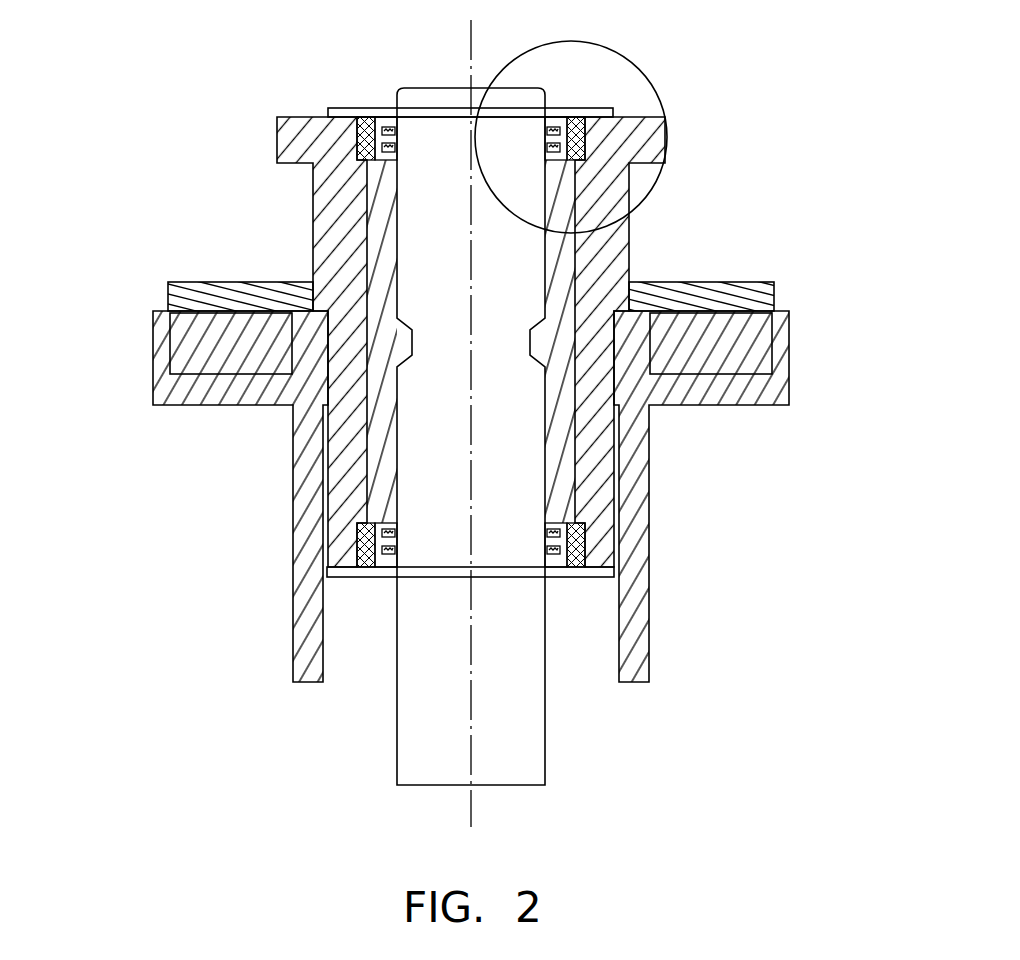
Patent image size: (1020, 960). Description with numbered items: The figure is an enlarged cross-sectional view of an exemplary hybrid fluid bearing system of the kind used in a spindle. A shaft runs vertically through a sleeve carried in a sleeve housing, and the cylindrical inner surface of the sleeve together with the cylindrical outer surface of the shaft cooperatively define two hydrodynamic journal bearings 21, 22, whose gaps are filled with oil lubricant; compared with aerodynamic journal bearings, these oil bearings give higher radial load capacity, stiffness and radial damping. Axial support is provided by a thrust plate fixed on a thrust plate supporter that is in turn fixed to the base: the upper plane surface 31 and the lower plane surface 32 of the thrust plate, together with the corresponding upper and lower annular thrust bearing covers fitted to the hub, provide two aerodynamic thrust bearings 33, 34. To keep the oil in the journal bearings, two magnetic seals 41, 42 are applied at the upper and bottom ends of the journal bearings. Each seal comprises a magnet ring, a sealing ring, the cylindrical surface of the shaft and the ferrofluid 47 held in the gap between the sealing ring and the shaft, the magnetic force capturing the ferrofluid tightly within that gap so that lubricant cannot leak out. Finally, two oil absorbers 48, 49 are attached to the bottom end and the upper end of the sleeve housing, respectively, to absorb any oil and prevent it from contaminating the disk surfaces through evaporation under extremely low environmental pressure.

The hydrodynamic journal bearing 21 is at (540, 245).
The hydrodynamic journal bearing 22 is at (543, 425).
The upper plane surface 31 is at (753, 312).
The lower plane surface 32 is at (750, 372).
The aerodynamic thrust bearing 33 is at (173, 292).
The aerodynamic thrust bearing 34 is at (160, 390).
The magnetic seal 41 is at (570, 117).
The magnetic seal 42 is at (582, 570).
The ferrofluid 47 is at (357, 118).
The oil absorber 48 is at (383, 572).
The oil absorber 49 is at (390, 117).